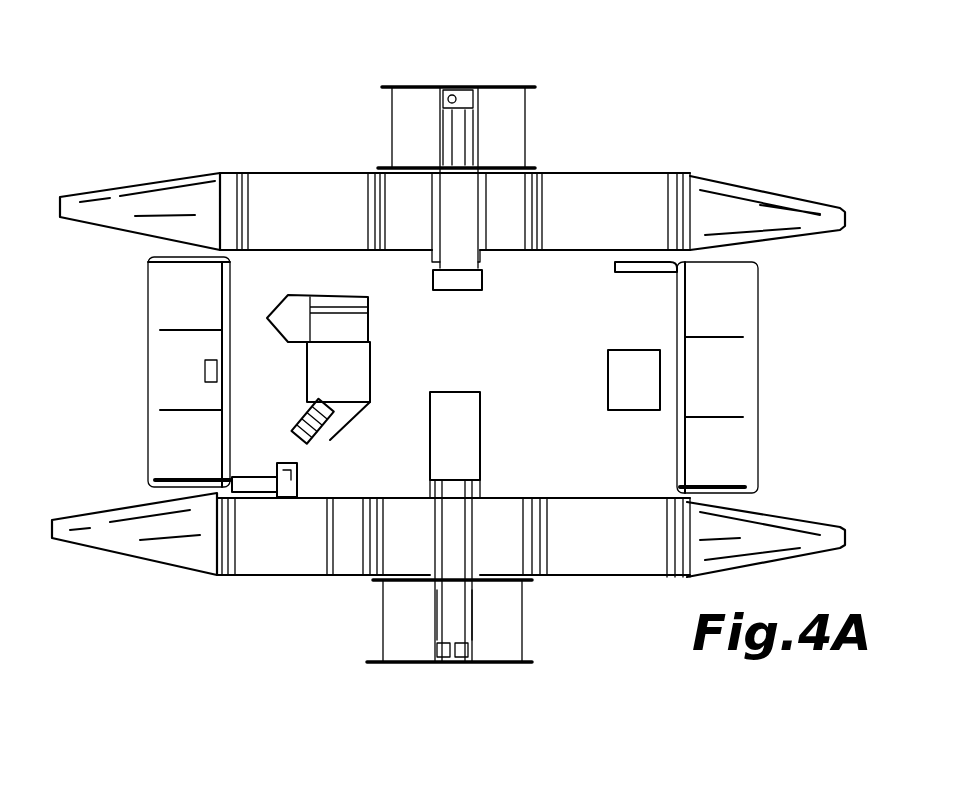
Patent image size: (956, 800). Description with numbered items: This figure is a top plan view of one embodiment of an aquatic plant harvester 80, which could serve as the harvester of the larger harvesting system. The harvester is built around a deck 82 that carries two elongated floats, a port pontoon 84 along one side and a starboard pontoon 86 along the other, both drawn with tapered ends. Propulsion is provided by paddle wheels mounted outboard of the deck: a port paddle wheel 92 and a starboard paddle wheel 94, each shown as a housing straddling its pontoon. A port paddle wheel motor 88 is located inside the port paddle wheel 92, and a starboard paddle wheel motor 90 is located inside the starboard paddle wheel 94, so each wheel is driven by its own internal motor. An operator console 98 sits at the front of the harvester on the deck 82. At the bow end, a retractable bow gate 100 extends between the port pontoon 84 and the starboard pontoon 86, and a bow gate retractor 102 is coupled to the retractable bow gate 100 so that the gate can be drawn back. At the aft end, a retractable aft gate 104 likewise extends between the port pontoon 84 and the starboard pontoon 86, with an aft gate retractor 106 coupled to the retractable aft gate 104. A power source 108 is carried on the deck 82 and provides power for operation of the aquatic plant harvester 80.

The aquatic plant harvester 80 is at (754, 162).
The deck 82 is at (490, 350).
The port pontoon 84 is at (165, 545).
The starboard pontoon 86 is at (185, 210).
The port paddle wheel motor 88 is at (455, 613).
The starboard paddle wheel motor 90 is at (444, 86).
The port paddle wheel 92 is at (497, 652).
The starboard paddle wheel 94 is at (513, 86).
The operator console 98 is at (372, 328).
The retractable bow gate 100 is at (167, 370).
The bow gate retractor 102 is at (297, 482).
The retractable aft gate 104 is at (735, 362).
The aft gate retractor 106 is at (627, 282).
The power source 108 is at (610, 405).